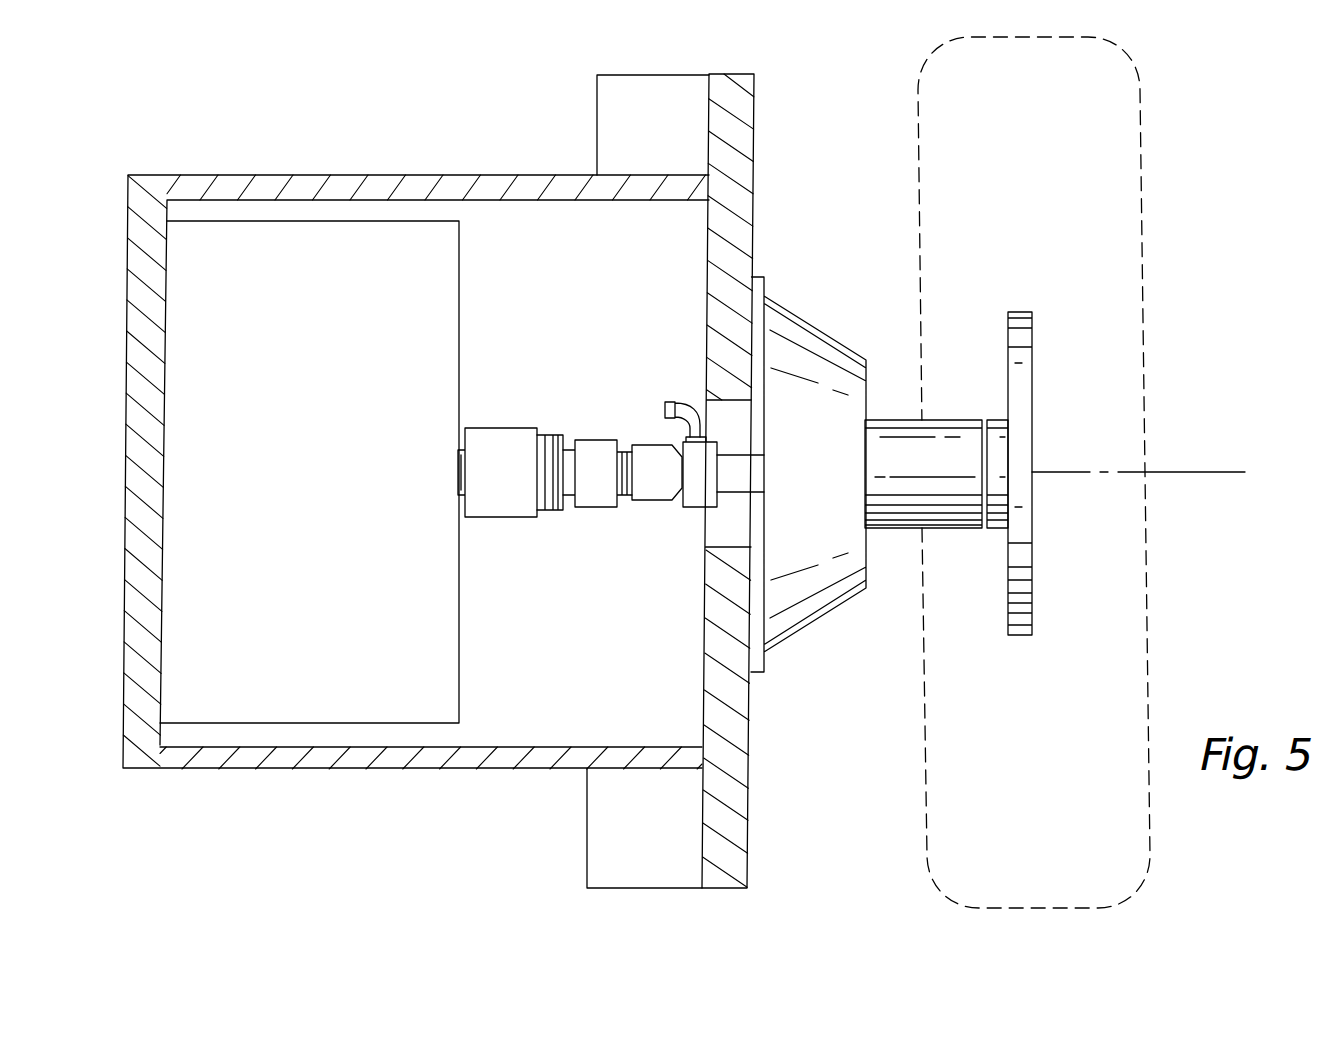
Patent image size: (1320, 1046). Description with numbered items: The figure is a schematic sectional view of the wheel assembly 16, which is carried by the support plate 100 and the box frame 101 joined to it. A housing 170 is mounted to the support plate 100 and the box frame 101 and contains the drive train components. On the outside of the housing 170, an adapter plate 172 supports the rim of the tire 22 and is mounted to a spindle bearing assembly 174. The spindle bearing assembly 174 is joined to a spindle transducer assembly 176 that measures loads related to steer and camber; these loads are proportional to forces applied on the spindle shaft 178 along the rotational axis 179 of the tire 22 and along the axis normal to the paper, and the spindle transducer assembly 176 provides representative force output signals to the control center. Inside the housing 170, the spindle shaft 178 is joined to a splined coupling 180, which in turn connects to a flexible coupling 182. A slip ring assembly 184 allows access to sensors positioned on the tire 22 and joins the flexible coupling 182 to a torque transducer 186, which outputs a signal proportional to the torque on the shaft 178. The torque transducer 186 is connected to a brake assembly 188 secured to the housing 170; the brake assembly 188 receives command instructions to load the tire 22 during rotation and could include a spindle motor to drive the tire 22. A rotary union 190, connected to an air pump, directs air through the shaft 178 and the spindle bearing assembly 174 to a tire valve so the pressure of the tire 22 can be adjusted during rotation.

The wheel assembly 16 is at (833, 128).
The tire 22 is at (1148, 548).
The support plate 100 is at (757, 108).
The box frame 101 is at (627, 74).
The housing 170 is at (306, 175).
The adapter plate 172 is at (1032, 462).
The spindle bearing assembly 174 is at (895, 530).
The spindle transducer assembly 176 is at (798, 312).
The spindle shaft 178 is at (733, 500).
The rotational axis 179 is at (1165, 470).
The splined coupling 180 is at (645, 500).
The flexible coupling 182 is at (589, 437).
The slip ring assembly 184 is at (553, 437).
The torque transducer 186 is at (470, 517).
The brake assembly 188 is at (376, 722).
The rotary union 190 is at (683, 400).